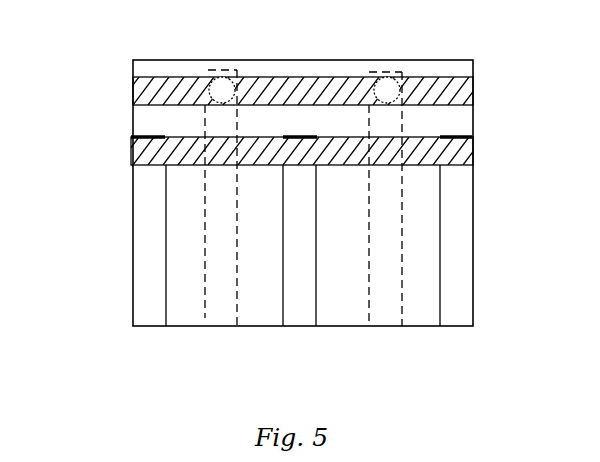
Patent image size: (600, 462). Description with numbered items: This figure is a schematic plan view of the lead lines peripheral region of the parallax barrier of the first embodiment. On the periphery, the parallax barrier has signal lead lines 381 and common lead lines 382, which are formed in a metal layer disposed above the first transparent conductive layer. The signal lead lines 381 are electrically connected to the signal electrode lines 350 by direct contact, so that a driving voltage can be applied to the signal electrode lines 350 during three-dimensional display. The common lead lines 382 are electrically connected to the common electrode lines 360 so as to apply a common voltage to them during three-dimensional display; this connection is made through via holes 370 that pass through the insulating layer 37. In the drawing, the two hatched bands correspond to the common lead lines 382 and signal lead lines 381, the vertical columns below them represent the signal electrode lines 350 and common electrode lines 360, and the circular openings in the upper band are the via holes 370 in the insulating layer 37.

The insulating layer 37 is at (312, 62).
The via holes 370 is at (220, 83).
The common lead lines 382 is at (145, 90).
The signal lead lines 381 is at (138, 145).
The signal electrode lines 350 is at (151, 312).
The common electrode lines 360 is at (219, 303).